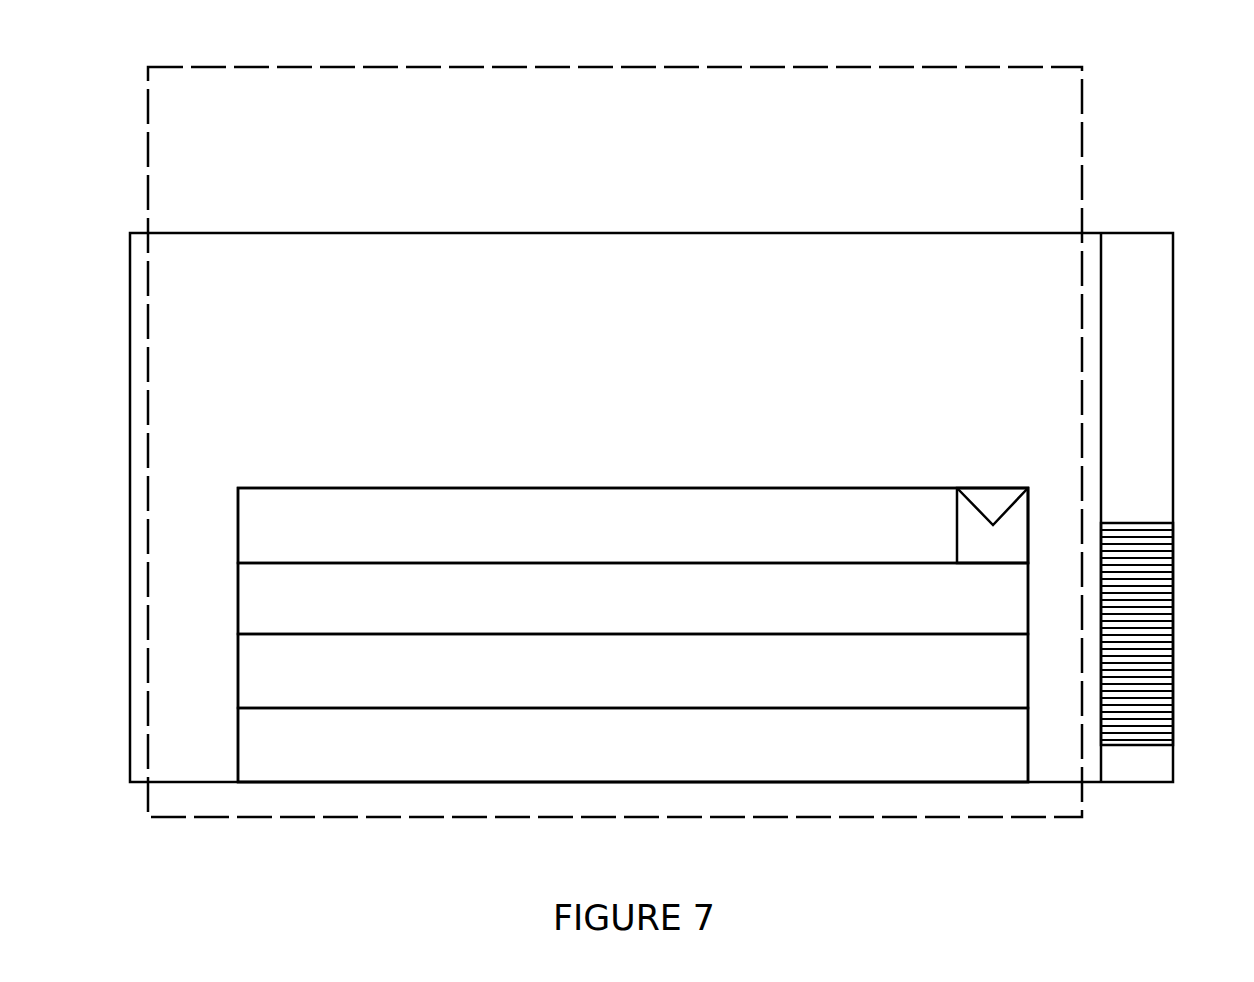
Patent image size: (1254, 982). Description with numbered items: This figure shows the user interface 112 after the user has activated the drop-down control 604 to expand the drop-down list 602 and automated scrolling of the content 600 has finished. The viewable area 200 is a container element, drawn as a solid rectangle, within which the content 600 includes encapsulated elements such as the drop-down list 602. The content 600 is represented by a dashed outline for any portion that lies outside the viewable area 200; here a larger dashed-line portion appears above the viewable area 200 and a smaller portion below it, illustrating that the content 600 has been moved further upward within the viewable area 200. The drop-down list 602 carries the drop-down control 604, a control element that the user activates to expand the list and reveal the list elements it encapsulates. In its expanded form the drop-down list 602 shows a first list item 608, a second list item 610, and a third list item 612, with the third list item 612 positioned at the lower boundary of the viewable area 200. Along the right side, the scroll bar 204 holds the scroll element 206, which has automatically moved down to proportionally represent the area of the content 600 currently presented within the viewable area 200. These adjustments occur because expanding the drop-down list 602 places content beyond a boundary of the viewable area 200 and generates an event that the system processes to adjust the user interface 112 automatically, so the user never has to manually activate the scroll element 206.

The user interface 112 is at (80, 88).
The viewable area 200 is at (470, 233).
The scroll bar 204 is at (1137, 470).
The scroll element 206 is at (1137, 615).
The content 600 is at (147, 724).
The drop-down list 602 is at (598, 488).
The drop-down control 604 is at (993, 507).
The list item_1 608 is at (275, 595).
The list item_2 610 is at (275, 672).
The list item_3 612 is at (275, 748).